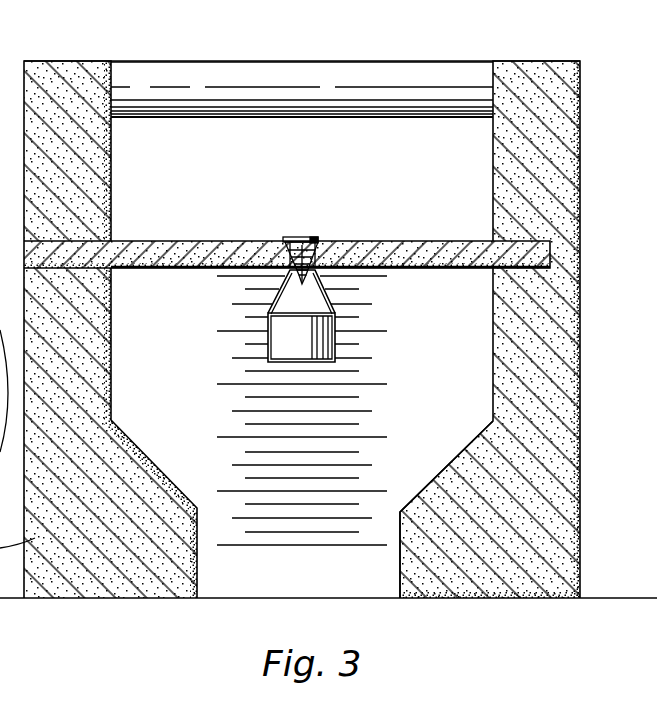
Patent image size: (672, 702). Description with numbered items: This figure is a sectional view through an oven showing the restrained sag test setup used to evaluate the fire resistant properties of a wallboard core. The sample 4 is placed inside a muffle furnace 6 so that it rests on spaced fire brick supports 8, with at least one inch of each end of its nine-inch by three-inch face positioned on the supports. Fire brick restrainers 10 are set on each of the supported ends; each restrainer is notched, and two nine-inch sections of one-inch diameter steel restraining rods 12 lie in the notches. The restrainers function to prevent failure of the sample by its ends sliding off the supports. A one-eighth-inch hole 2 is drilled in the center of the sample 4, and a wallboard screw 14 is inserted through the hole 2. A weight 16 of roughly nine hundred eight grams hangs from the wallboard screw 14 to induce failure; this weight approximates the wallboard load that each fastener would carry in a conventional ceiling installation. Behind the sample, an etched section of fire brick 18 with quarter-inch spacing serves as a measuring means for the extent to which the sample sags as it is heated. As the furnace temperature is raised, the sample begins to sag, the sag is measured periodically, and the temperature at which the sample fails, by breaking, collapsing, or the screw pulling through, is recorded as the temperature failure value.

The fire brick restrainers 10 is at (47, 72).
The steel restraining rods 12 is at (285, 77).
The hole 2 is at (290, 252).
The wallboard screw 14 is at (304, 247).
The sample 4 is at (452, 270).
The weight 16 is at (288, 327).
The etched section of fire brick 18 is at (403, 380).
The muffle furnace 6 is at (598, 367).
The fire brick supports 8 is at (578, 510).